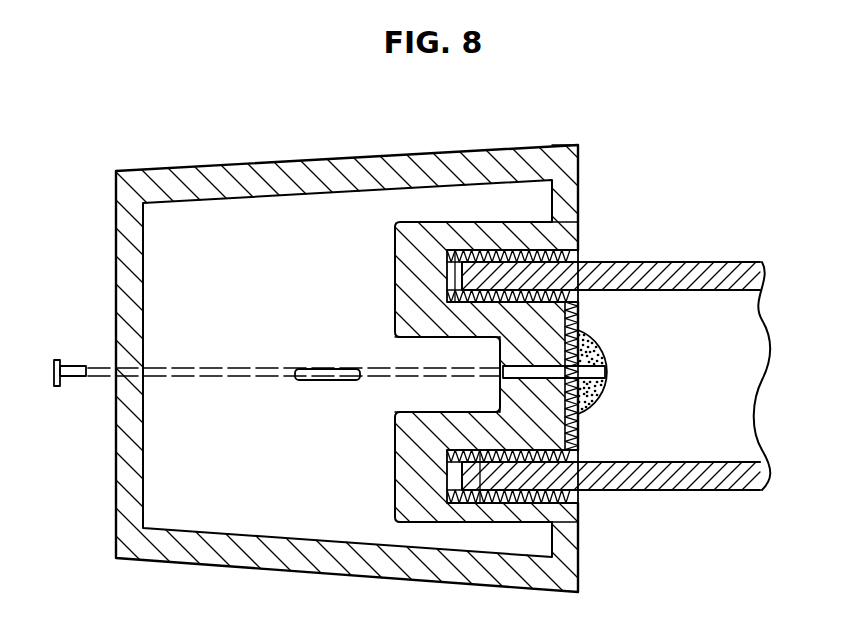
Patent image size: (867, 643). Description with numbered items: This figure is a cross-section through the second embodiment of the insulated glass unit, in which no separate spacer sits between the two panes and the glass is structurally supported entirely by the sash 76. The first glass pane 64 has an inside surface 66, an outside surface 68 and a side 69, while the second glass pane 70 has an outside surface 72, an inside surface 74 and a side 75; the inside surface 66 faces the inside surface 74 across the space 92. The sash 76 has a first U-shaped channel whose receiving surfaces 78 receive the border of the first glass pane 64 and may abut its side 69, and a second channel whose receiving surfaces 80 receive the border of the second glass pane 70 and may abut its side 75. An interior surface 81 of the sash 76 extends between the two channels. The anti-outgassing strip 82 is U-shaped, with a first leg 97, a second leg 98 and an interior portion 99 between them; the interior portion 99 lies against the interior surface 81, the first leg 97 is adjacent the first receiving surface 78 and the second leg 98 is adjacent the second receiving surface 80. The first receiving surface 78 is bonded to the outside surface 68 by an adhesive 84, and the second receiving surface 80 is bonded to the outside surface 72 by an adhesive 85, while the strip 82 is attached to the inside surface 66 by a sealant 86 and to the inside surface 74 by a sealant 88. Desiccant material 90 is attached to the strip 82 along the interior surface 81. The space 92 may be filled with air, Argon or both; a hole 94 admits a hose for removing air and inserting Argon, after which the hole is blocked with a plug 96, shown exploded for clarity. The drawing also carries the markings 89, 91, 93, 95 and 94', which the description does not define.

The first glass pane 64 is at (700, 462).
The inside surface 66 is at (651, 462).
The outside surface 68 is at (688, 491).
The side 69 is at (448, 470).
The second glass pane 70 is at (728, 262).
The outside surface 72 is at (672, 262).
The inside surface 74 is at (690, 291).
The side 75 is at (448, 263).
The sash 76 is at (287, 560).
The receiving surface 78 is at (448, 489).
The receiving surface 80 is at (578, 238).
The interior surface 81 is at (580, 331).
The anti-outgassing strip 82 is at (580, 428).
The adhesive 84 is at (579, 508).
The adhesive 85 is at (575, 262).
The sealant 86 is at (499, 416).
The sealant 88 is at (455, 303).
The lower seal 89 is at (580, 443).
The desiccant material 90 is at (604, 389).
The upper seal ring 91 is at (582, 307).
The space 92 is at (694, 388).
The lower inner gasket 93 is at (580, 530).
The hole 94 is at (529, 358).
The actuator rod 94' is at (294, 350).
The upper outer gasket 95 is at (576, 253).
The plug 96 is at (68, 362).
The first leg 97 is at (480, 503).
The second leg 98 is at (455, 265).
The interior portion 99 is at (567, 421).